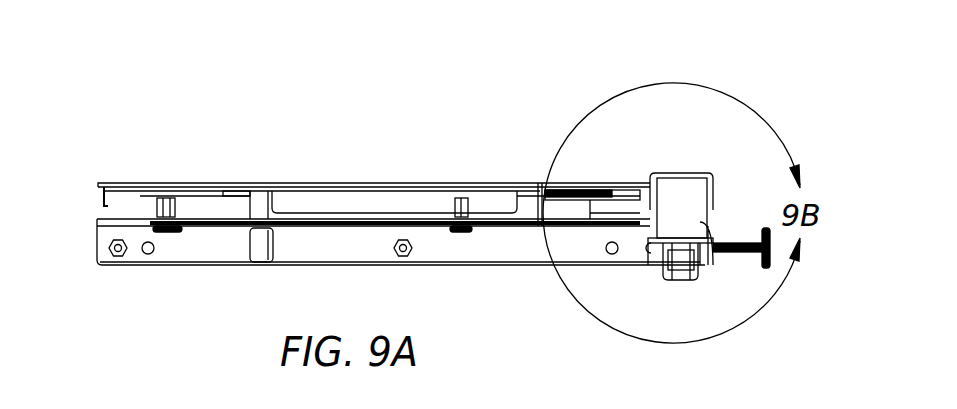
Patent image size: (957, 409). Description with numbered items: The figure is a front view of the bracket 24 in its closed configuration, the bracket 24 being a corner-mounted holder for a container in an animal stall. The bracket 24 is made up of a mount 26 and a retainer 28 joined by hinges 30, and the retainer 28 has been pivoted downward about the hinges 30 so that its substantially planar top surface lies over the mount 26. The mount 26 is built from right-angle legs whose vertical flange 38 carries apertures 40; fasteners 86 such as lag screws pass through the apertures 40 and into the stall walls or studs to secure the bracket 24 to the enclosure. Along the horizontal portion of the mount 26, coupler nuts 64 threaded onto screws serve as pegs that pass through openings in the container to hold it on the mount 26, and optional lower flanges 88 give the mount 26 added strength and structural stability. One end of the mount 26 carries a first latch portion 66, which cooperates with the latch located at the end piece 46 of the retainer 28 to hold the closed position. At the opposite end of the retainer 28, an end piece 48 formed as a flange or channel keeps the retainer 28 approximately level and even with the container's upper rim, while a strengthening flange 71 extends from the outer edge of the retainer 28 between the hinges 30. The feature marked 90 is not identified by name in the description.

The bracket 24 is at (447, 84).
The mount 26 is at (350, 258).
The retainer 28 is at (315, 172).
The hinge 30 is at (220, 195).
The vertical flange 38 is at (500, 246).
The aperture 40 is at (152, 256).
The end piece 46 is at (680, 204).
The end piece 48 is at (100, 201).
The coupler nut 64 is at (150, 201).
The first latch portion 66 is at (690, 296).
The strengthening flange 71 is at (367, 199).
The fastener 86 is at (120, 259).
The lower flange 88 is at (258, 264).
The rail end 90 is at (268, 196).